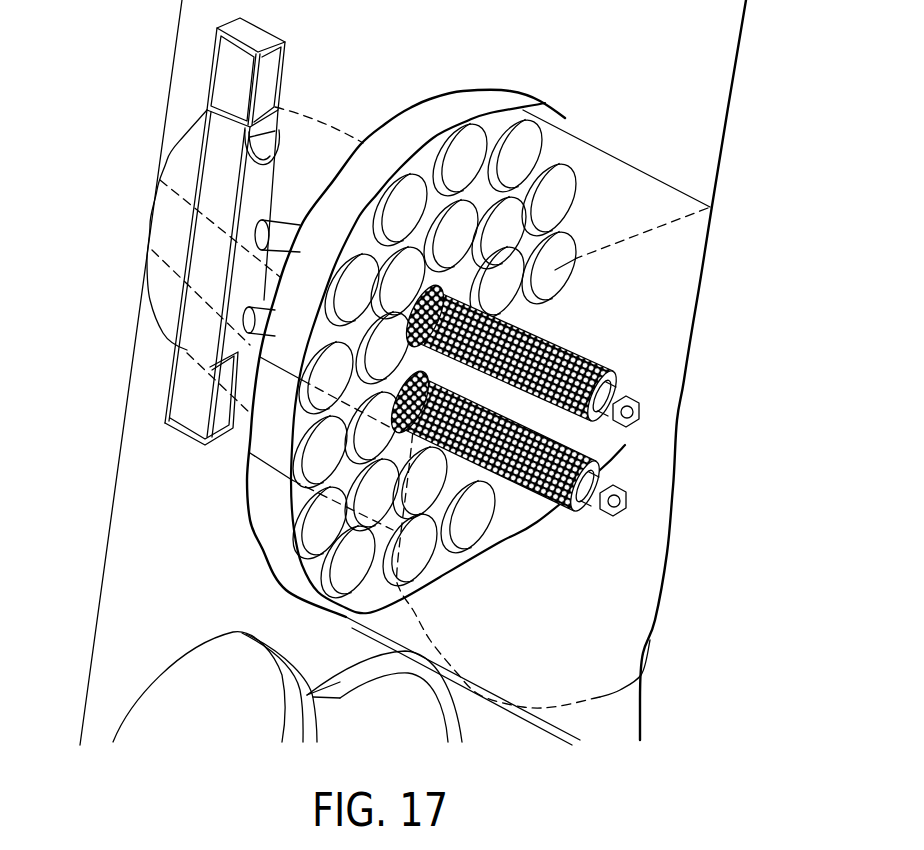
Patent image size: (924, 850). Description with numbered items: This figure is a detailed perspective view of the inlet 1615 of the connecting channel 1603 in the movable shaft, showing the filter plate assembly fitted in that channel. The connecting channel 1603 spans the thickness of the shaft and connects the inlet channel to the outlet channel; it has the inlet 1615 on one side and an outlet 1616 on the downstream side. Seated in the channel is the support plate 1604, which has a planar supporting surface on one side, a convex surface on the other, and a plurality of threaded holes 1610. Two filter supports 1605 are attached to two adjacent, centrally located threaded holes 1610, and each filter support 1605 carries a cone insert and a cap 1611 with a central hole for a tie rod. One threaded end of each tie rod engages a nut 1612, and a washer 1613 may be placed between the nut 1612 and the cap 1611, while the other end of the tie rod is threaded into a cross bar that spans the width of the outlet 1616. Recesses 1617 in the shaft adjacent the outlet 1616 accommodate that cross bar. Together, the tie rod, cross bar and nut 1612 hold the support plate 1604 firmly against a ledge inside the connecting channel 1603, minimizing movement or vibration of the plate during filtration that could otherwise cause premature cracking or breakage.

The connecting channel 1603 is at (630, 598).
The support plate 1604 is at (480, 108).
The filter support 1605 is at (605, 364).
The threaded hole 1610 is at (457, 513).
The cap 1611 is at (622, 378).
The nut 1612 is at (612, 478).
The washer 1613 is at (600, 527).
The inlet 1615 is at (648, 651).
The outlet 1616 is at (150, 221).
The recess 1617 is at (210, 71).